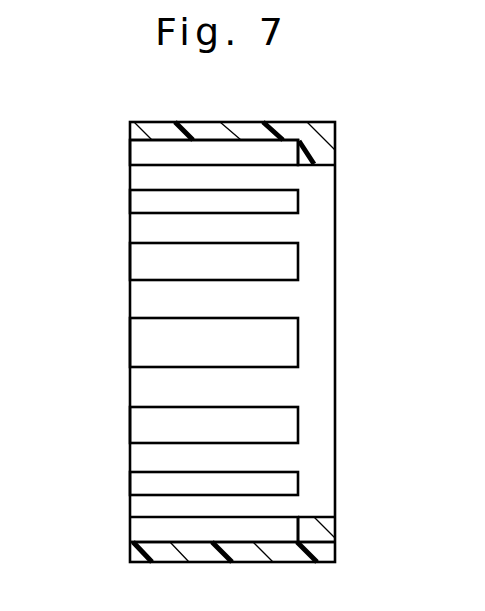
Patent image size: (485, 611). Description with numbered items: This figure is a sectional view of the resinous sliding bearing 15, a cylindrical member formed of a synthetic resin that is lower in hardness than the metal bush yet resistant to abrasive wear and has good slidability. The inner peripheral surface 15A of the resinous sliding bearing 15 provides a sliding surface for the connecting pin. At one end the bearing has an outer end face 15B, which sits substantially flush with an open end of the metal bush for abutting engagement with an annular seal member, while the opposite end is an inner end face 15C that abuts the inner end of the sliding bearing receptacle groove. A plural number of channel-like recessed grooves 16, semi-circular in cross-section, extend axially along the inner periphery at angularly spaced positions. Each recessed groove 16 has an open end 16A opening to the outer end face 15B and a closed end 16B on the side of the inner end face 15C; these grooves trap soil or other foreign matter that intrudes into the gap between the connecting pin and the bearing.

The resinous sliding bearing 15 is at (327, 135).
The inner peripheral surface 15A is at (318, 513).
The outer end face 15B is at (130, 130).
The inner end face 15C is at (337, 549).
The recessed grooves 16 is at (175, 152).
The open end 16A is at (152, 141).
The closed end 16B is at (300, 528).